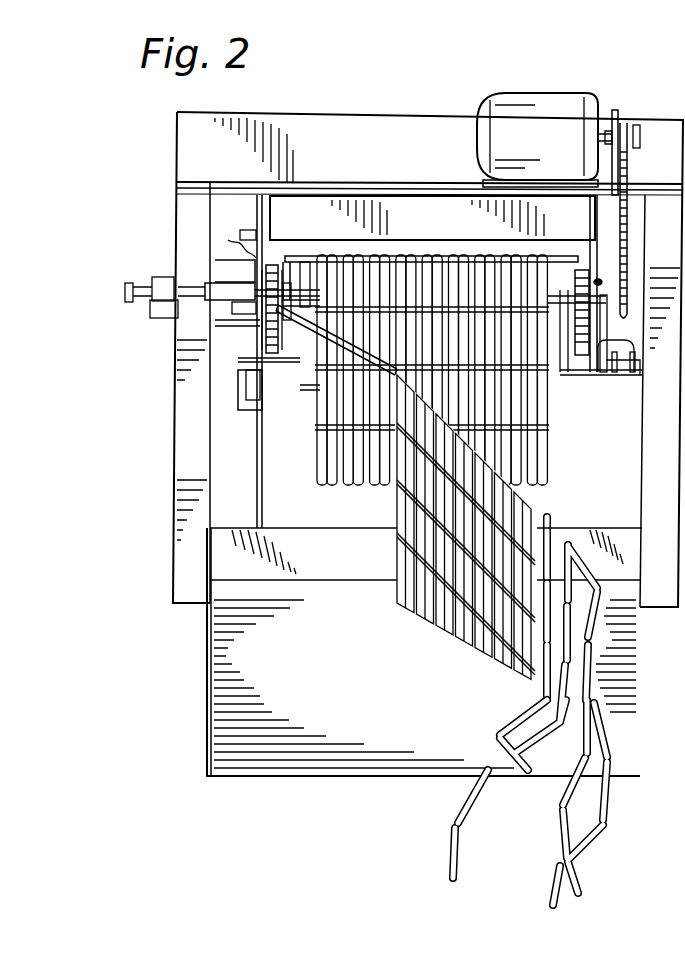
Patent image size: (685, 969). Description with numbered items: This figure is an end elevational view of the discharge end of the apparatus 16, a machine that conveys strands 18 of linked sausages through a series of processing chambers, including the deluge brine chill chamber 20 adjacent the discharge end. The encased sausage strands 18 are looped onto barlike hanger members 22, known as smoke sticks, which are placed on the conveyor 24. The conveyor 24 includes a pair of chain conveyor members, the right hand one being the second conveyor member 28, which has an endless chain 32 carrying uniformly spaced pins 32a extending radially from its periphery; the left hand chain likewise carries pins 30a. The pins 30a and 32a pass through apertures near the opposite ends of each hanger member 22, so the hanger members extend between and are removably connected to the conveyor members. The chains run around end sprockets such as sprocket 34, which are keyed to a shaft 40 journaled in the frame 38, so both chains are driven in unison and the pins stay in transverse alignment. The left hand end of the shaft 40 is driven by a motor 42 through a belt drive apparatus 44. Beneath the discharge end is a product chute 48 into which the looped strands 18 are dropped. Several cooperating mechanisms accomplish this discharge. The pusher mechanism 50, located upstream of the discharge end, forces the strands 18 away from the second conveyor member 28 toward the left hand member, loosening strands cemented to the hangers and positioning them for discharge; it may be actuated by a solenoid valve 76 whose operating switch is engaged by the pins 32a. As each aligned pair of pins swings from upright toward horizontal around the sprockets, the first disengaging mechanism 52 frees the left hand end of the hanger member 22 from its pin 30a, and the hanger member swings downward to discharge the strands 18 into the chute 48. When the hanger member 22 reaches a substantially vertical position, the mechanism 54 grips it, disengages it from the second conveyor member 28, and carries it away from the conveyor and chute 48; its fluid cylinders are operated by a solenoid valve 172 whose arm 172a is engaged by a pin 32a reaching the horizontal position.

The apparatus 16 is at (633, 98).
The strands of linked sausages 18 is at (540, 432).
The deluge brine chill chamber 20 is at (440, 229).
The hanger member 22 is at (293, 300).
The conveyor 24 is at (603, 280).
The second conveyor member 28 is at (336, 340).
The pins 30a is at (570, 258).
The endless chain 32 is at (268, 340).
The pins 32a is at (263, 236).
The end sprocket 34 is at (602, 378).
The frame 38 is at (598, 243).
The shaft 40 is at (297, 300).
The motor 42 is at (560, 108).
The belt drive apparatus 44 is at (634, 170).
The product chute 48 is at (360, 695).
The pusher mechanism 50 is at (157, 272).
The first disengaging mechanism 52 is at (628, 385).
The mechanism 54 is at (230, 403).
The solenoid valve 76 is at (257, 258).
The solenoid valve 172 is at (250, 310).
The arm 172a is at (240, 322).